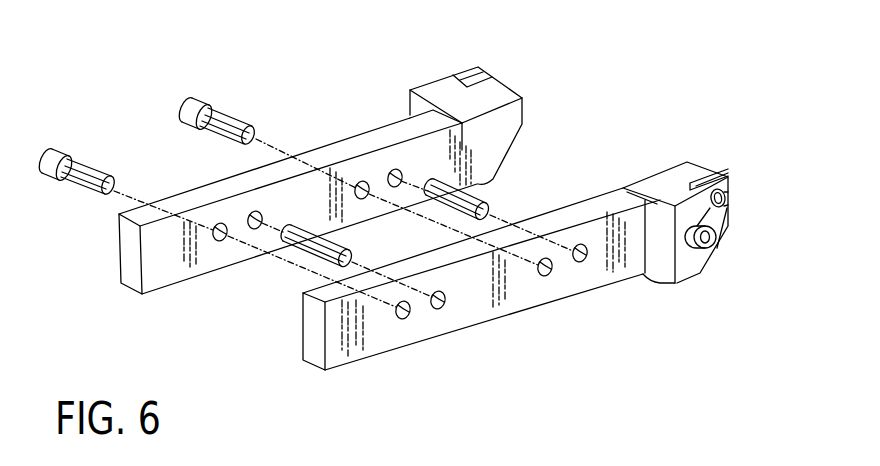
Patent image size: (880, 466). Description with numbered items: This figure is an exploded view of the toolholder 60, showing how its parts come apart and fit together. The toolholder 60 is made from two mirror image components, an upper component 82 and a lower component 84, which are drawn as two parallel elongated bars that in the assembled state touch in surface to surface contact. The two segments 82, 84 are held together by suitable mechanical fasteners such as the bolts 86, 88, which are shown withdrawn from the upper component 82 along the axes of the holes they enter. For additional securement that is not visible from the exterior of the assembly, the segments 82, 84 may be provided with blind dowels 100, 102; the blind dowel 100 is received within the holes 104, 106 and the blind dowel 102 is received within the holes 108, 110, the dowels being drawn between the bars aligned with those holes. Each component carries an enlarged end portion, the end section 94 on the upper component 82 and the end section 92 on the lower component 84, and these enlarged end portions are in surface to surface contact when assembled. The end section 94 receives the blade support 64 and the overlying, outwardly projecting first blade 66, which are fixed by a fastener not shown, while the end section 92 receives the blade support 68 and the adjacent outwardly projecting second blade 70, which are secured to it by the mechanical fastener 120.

The toolholder 60 is at (481, 337).
The blade support 64 is at (505, 98).
The first blade 66 is at (478, 66).
The blade support 68 is at (712, 177).
The second blade 70 is at (731, 177).
The upper component 82 is at (131, 268).
The lower component 84 is at (305, 350).
The bolt 86 is at (57, 150).
The bolt 88 is at (200, 102).
The enlarged end portion 92 is at (694, 184).
The enlarged end portion 94 is at (508, 119).
The blind dowel 100 is at (342, 243).
The blind dowel 102 is at (478, 196).
The hole 104 is at (437, 309).
The hole 106 is at (250, 220).
The hole 108 is at (582, 262).
The hole 110 is at (395, 171).
The mechanical fastener 120 is at (717, 243).